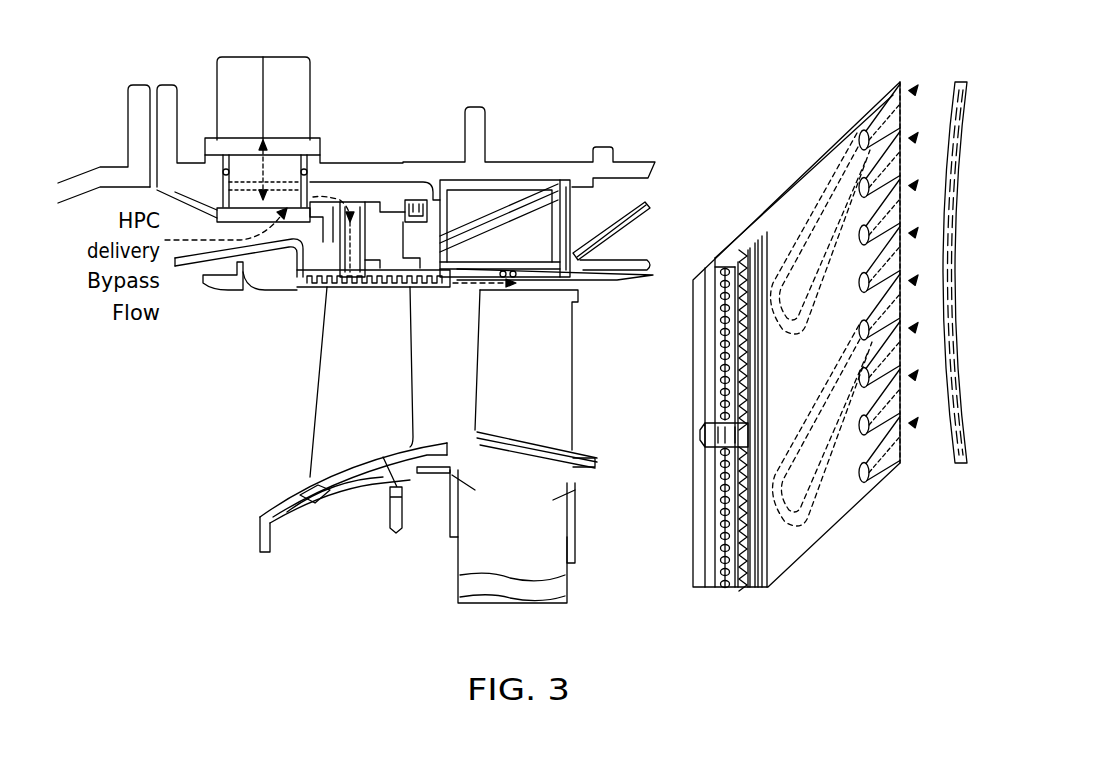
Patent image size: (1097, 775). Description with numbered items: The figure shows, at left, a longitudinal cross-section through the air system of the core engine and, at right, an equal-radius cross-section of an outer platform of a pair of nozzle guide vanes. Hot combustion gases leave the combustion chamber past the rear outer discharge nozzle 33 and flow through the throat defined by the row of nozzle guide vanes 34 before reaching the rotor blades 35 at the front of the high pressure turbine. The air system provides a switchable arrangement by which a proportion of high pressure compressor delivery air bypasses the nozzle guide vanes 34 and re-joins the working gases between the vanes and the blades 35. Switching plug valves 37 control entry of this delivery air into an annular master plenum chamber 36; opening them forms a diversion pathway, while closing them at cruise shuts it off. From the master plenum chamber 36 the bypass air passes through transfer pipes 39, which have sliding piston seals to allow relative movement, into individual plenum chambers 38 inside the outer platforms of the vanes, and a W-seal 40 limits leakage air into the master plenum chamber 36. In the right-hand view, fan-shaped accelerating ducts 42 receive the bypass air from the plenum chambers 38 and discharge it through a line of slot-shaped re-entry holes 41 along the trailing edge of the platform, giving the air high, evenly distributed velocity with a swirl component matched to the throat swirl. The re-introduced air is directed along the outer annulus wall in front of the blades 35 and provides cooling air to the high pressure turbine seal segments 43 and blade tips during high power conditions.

The rear outer discharge nozzle 33 is at (230, 285).
The nozzle guide vanes 34 is at (333, 407).
The rotor blades 35 is at (555, 360).
The annular master plenum chamber 36 is at (392, 187).
The switching plug valves 37 is at (313, 80).
The plenum chambers 38 is at (412, 291).
The transfer pipes 39 is at (310, 287).
The W-seal 40 is at (422, 206).
The re-entry holes 41 is at (518, 240).
The fan-shaped accelerating ducts 42 is at (890, 102).
The high pressure turbine seal segments 43 is at (618, 253).